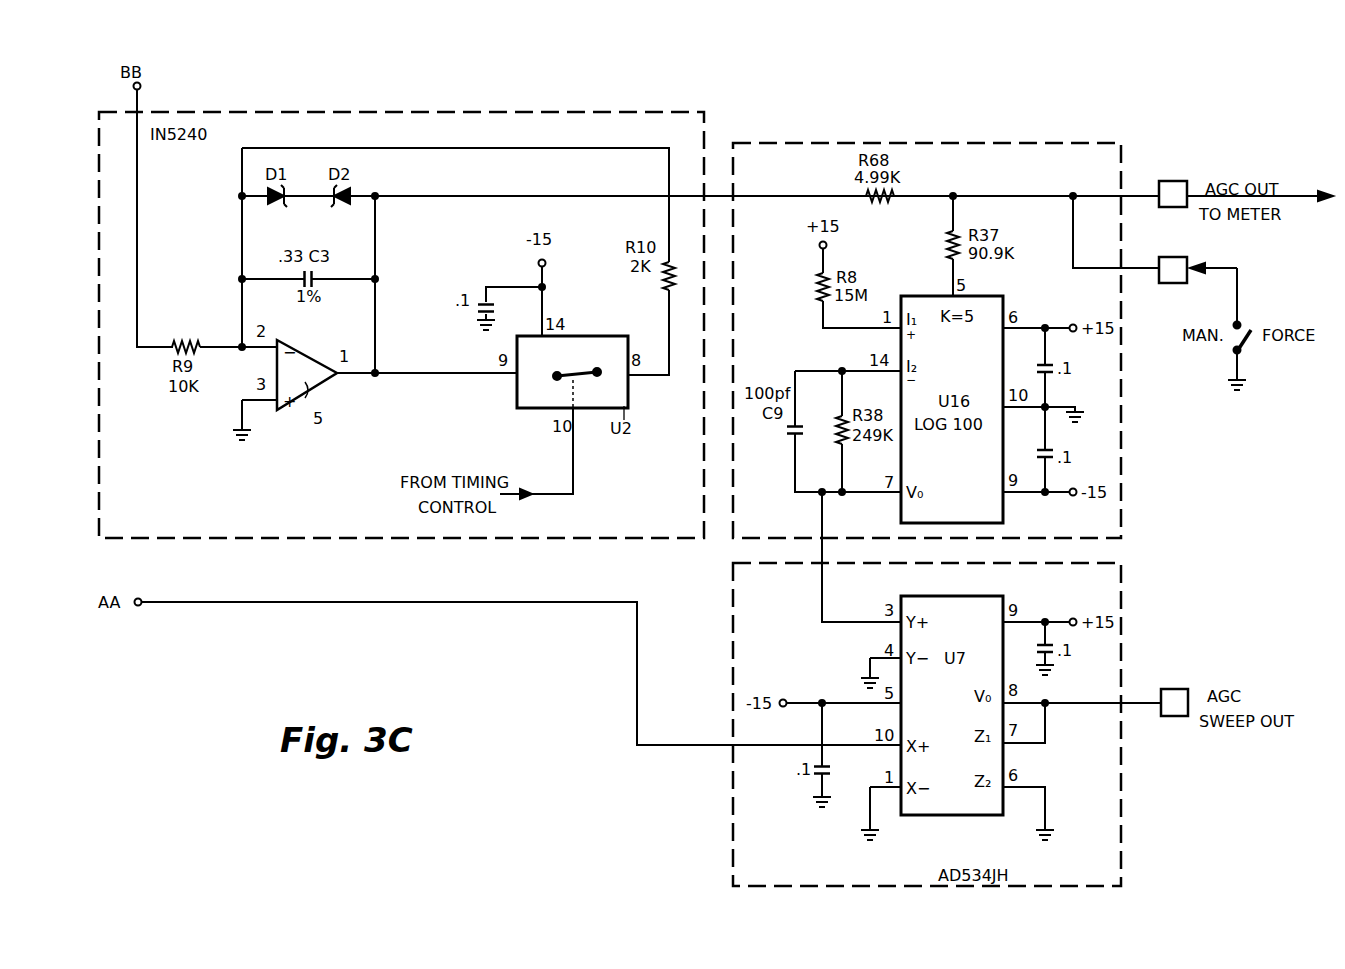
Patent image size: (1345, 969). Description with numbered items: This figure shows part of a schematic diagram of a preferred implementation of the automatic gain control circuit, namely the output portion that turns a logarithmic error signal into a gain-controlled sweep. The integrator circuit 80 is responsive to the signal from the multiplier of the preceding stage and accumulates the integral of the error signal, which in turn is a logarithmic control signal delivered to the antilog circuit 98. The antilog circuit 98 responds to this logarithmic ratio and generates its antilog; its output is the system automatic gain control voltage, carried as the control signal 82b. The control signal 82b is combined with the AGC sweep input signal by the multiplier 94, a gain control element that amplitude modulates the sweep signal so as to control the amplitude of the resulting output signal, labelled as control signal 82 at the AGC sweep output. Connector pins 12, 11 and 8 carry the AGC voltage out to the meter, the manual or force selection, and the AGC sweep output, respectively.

The integrator circuit 80 is at (305, 540).
The control signal 82 is at (1091, 703).
The control signal 82b is at (822, 600).
The multiplier 94 is at (1122, 620).
The antilog circuit 98 is at (1122, 437).
The AGC sweep out connector pin 8 is at (1174, 702).
The manual force connector pin 11 is at (1173, 270).
The AGC out to meter connector pin 12 is at (1173, 194).